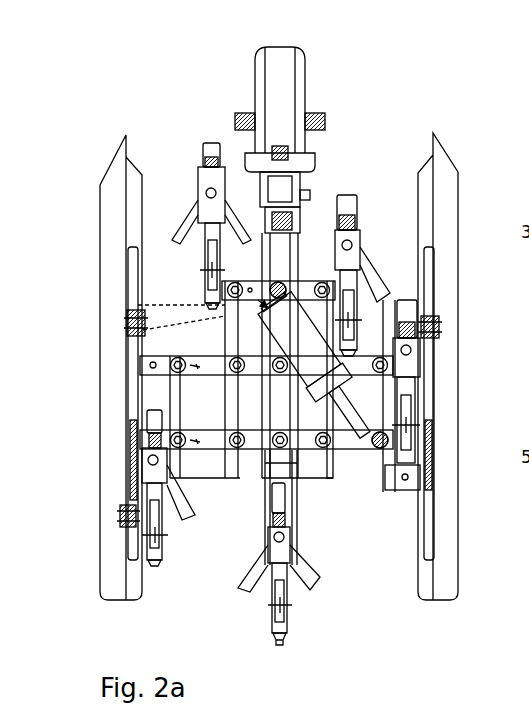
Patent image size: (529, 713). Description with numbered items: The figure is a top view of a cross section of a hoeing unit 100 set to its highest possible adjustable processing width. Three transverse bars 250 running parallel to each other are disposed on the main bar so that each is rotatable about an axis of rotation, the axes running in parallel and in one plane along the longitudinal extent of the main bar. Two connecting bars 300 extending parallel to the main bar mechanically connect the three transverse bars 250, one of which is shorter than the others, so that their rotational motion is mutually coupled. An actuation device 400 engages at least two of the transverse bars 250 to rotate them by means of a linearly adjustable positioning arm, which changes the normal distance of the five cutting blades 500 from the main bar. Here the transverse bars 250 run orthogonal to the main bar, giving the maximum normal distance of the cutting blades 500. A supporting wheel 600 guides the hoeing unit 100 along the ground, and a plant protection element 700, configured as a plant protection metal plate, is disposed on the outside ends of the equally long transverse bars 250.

The hoeing unit 100 is at (347, 105).
The transverse bar 250 is at (257, 283).
The connecting bar 300 is at (127, 302).
The actuation device 400 is at (130, 330).
The cutting blade 500 is at (190, 229).
The supporting wheel 600 is at (278, 88).
The plant protection element 700 is at (112, 198).